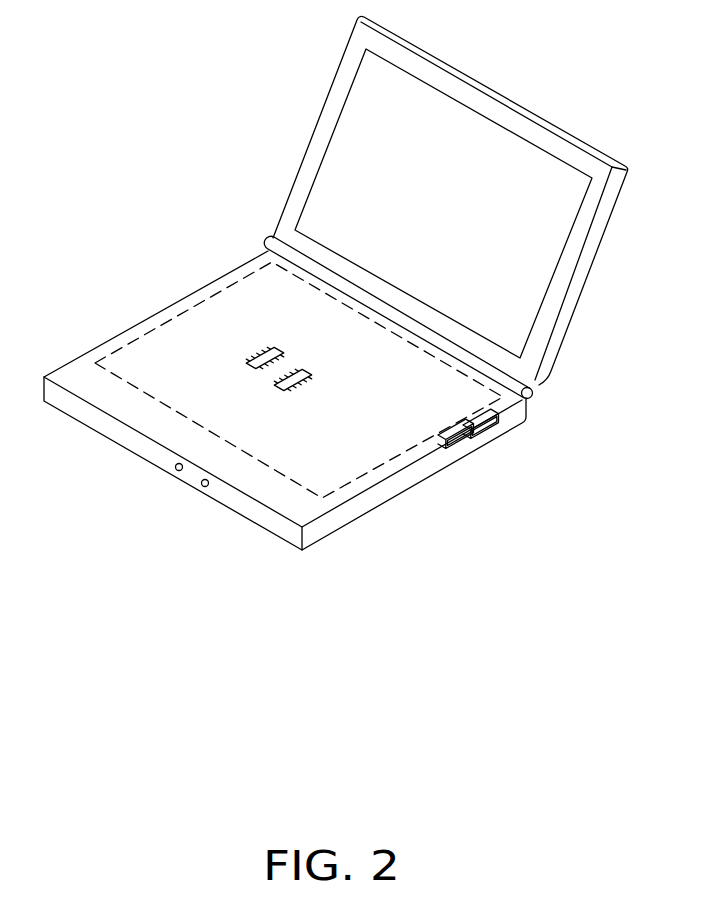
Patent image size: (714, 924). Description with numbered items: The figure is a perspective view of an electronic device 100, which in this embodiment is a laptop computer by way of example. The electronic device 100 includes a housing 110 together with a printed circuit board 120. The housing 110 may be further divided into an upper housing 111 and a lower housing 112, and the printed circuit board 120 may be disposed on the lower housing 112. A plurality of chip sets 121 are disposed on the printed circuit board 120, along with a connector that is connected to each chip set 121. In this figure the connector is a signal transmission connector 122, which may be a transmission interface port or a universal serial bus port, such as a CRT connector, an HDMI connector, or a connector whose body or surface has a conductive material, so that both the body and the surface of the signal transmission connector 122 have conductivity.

The electronic device 100 is at (329, 362).
The housing 110 is at (279, 434).
The upper housing 111 is at (98, 356).
The lower housing 112 is at (361, 514).
The printed circuit board 120 is at (128, 385).
The chip set 121 is at (249, 366).
The signal transmission connector 122 is at (468, 448).